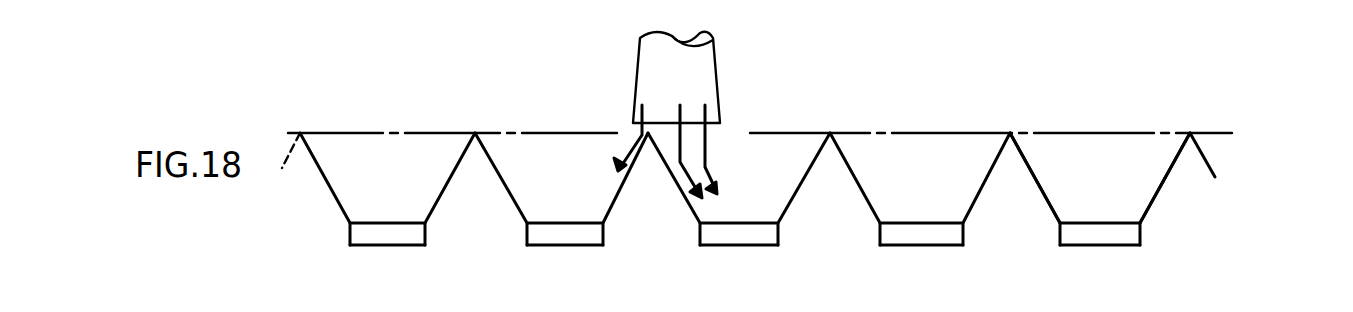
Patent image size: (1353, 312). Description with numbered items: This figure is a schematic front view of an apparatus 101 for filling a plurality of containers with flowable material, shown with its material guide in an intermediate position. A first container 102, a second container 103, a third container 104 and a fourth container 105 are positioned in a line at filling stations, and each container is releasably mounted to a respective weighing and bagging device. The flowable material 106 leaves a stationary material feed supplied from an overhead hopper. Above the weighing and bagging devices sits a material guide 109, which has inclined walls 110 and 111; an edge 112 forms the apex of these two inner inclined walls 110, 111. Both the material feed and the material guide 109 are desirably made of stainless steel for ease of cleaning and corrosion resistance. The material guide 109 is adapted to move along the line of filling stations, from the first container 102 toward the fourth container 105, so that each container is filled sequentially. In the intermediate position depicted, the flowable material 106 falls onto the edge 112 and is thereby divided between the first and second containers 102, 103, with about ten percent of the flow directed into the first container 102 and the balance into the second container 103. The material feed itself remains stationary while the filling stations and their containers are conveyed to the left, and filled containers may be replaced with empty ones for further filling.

The apparatus 101 is at (313, 218).
The first container 102 is at (561, 205).
The second container 103 is at (739, 205).
The third container 104 is at (920, 205).
The fourth container 105 is at (1100, 205).
The flowable material 106 is at (634, 142).
The material guide 109 is at (1100, 190).
The inclined wall 110 is at (1138, 99).
The inclined wall 111 is at (990, 130).
The edge 112 is at (794, 156).